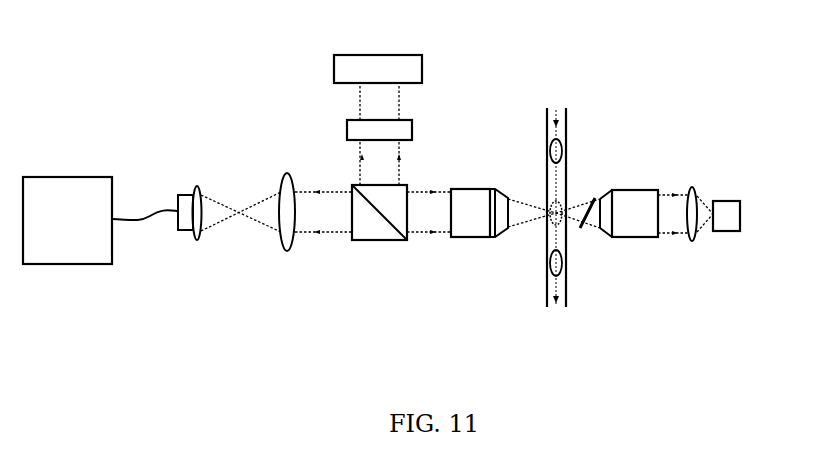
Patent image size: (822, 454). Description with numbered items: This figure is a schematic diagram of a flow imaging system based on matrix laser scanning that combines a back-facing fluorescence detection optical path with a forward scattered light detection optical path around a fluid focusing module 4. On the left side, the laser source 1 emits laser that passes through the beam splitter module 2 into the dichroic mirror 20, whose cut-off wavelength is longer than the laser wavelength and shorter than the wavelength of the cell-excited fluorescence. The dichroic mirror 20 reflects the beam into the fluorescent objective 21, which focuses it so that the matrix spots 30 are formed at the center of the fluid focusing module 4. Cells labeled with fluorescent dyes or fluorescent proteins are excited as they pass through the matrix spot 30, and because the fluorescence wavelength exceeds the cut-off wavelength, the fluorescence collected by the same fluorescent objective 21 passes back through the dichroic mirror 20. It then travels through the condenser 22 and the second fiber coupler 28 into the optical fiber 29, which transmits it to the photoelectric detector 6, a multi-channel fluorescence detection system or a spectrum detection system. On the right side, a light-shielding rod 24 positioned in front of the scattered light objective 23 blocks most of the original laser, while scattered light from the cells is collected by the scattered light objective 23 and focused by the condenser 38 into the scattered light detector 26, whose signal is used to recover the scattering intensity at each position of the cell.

The laser source 1 is at (377, 54).
The beam splitter module 2 is at (412, 126).
The fluid focusing module 4 is at (572, 140).
The photoelectric detector 6 is at (52, 168).
The dichroic mirror 20 is at (383, 243).
The fluorescent objective 21 is at (470, 240).
The condenser 22 is at (289, 258).
The scattered light objective 23 is at (637, 240).
The light-shielding rod 24 is at (587, 196).
The scattered light detector 26 is at (730, 233).
The second fiber coupler 28 is at (187, 250).
The optical fiber 29 is at (156, 196).
The matrix spot 30 is at (548, 205).
The condenser 38 is at (690, 186).